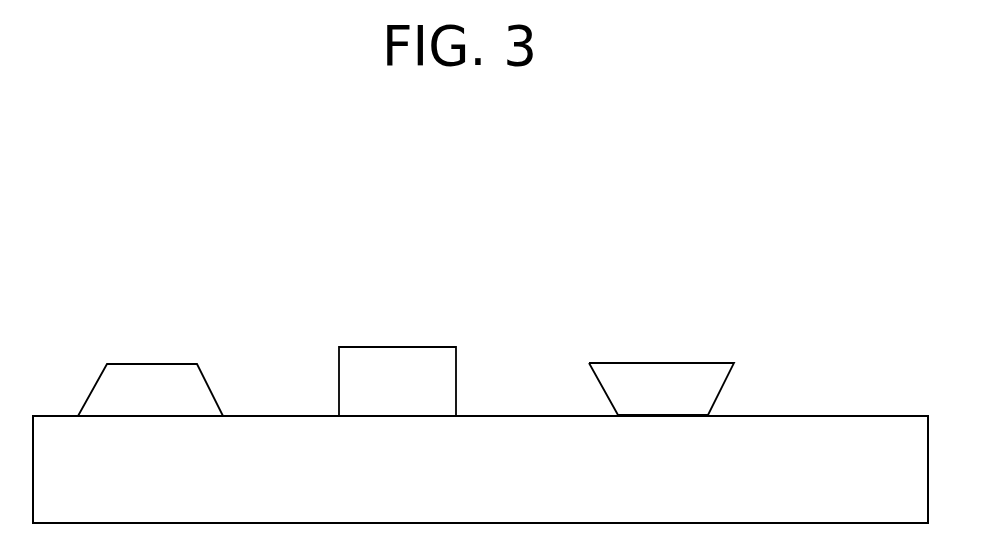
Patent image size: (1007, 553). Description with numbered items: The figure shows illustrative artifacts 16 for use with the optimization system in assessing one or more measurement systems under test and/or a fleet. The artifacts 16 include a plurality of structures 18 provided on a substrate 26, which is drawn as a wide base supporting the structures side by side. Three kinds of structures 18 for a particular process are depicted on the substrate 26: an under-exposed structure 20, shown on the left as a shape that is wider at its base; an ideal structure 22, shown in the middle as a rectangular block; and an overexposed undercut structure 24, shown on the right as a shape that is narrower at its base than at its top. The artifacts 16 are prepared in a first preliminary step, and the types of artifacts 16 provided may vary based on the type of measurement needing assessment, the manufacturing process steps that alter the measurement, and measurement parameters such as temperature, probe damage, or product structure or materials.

The artifacts 16 is at (363, 235).
The structures 18 is at (363, 235).
The under-exposed structure 20 is at (164, 387).
The ideal structure 22 is at (409, 373).
The overexposed undercut structure 24 is at (668, 385).
The substrate 26 is at (480, 476).